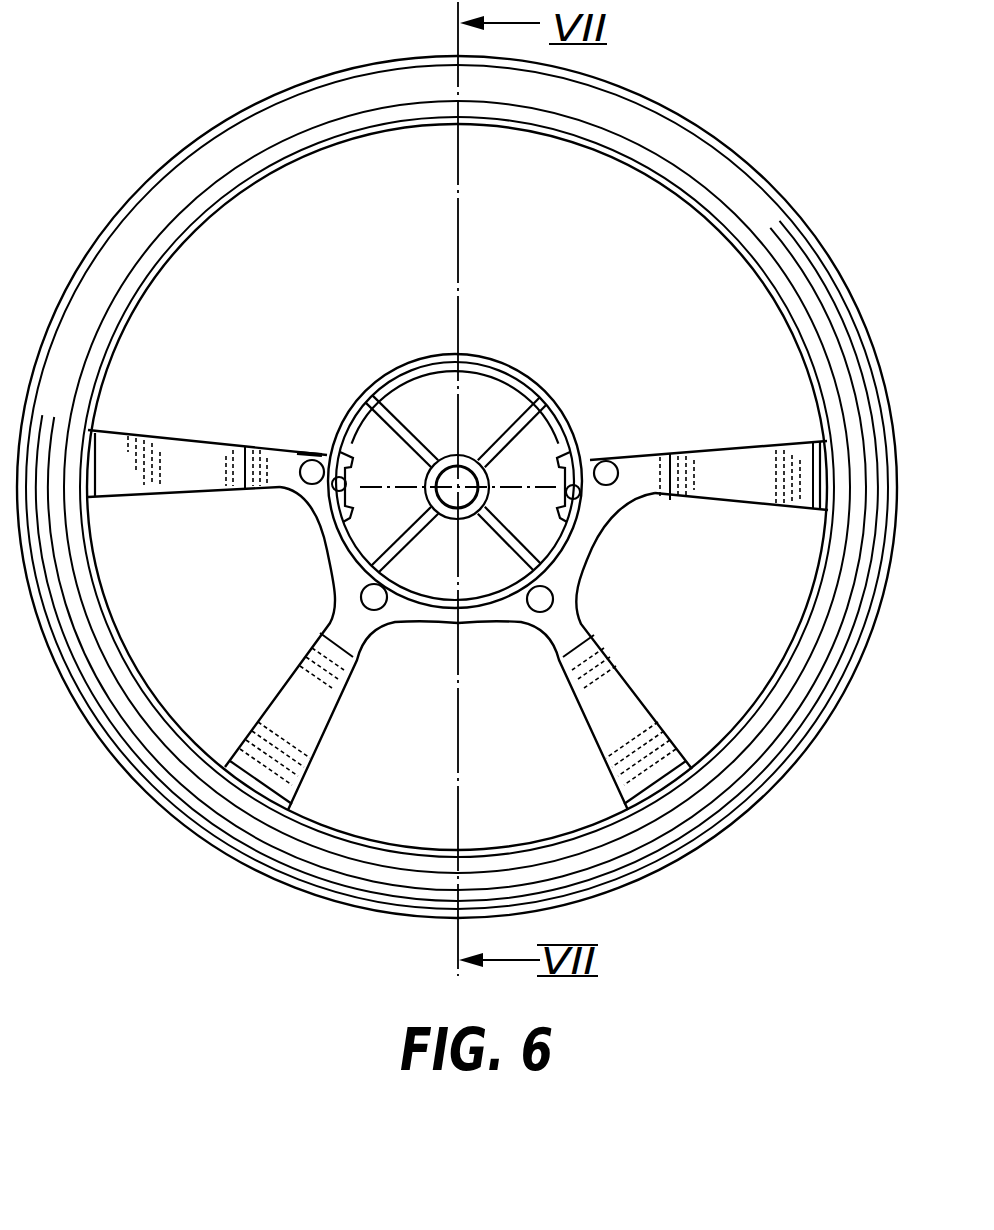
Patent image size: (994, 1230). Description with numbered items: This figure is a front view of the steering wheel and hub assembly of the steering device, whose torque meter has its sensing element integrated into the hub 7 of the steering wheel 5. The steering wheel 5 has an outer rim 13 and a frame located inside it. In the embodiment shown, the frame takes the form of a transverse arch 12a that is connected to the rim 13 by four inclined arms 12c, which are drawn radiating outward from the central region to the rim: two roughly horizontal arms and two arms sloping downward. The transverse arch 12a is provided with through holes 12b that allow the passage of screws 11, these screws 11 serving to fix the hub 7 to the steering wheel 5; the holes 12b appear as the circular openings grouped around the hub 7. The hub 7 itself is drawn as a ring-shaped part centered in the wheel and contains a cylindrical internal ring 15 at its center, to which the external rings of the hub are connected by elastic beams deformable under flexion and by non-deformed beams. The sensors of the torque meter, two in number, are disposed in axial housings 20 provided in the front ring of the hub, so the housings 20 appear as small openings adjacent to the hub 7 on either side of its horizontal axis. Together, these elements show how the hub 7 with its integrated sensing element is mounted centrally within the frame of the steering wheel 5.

The steering wheel 5 is at (457, 487).
The rim 13 is at (770, 235).
The hub 7 is at (546, 378).
The cylindrical internal ring 15 is at (469, 443).
The axial housings 20 is at (342, 484).
The transverse arch 12a is at (272, 472).
The through holes 12b is at (610, 461).
The screws 11 is at (460, 532).
The inclined arms 12c is at (458, 589).